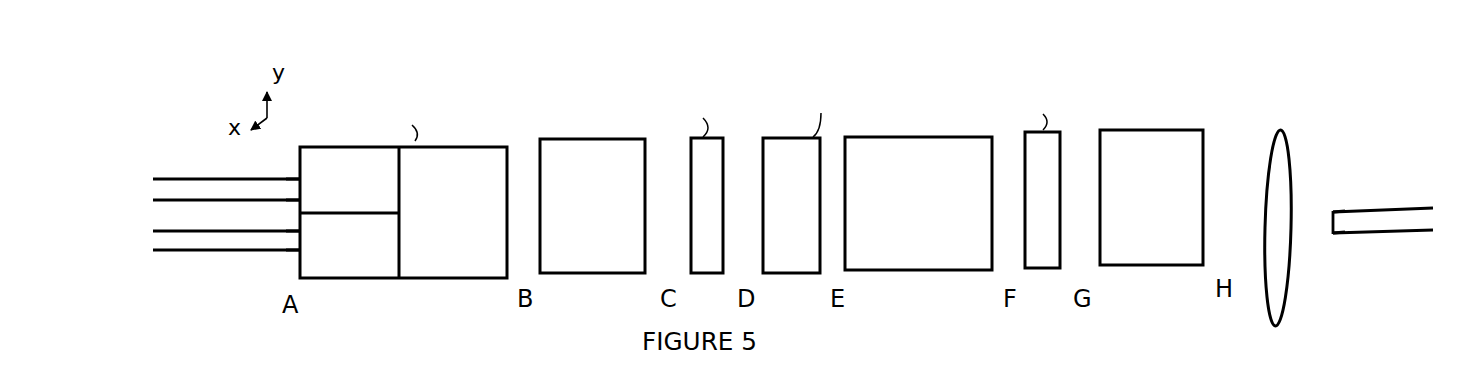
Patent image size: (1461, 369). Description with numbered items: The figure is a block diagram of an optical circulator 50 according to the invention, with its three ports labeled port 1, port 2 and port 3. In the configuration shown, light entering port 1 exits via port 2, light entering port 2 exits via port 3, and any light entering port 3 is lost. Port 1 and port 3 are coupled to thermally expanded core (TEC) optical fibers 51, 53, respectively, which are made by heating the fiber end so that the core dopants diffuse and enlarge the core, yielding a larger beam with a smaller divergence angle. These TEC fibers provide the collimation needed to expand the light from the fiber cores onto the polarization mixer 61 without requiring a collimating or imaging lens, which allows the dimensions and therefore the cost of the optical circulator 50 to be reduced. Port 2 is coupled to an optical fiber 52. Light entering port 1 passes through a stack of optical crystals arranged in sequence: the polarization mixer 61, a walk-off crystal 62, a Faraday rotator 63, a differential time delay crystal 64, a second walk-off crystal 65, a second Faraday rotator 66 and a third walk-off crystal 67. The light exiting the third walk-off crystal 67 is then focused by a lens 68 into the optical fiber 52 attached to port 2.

The optical circulator 50 is at (1225, 111).
The thermally expanded core optical fiber 51 is at (185, 251).
The optical fiber 52 is at (1366, 208).
The thermally expanded core optical fiber 53 is at (189, 178).
The port 1 is at (287, 252).
The port 2 is at (1345, 237).
The port 3 is at (287, 170).
The polarization mixer 61 is at (418, 279).
The walk-off crystal 62 is at (597, 274).
The Faraday rotator 63 is at (718, 274).
The differential time delay crystal 64 is at (803, 274).
The second walk-off crystal 65 is at (927, 271).
The second Faraday rotator 66 is at (1052, 269).
The third walk-off crystal 67 is at (1163, 266).
The lens 68 is at (1284, 303).